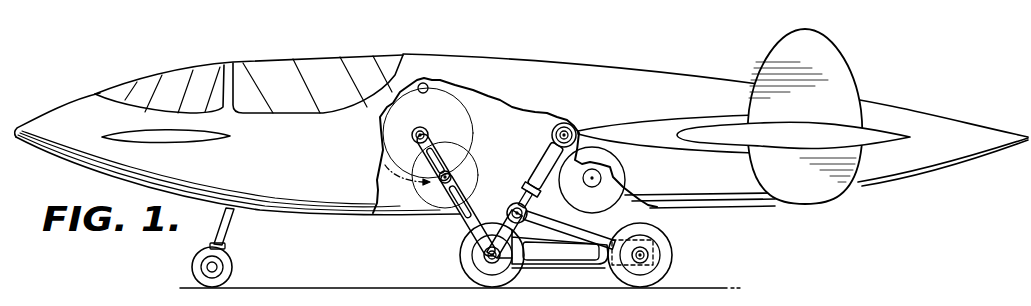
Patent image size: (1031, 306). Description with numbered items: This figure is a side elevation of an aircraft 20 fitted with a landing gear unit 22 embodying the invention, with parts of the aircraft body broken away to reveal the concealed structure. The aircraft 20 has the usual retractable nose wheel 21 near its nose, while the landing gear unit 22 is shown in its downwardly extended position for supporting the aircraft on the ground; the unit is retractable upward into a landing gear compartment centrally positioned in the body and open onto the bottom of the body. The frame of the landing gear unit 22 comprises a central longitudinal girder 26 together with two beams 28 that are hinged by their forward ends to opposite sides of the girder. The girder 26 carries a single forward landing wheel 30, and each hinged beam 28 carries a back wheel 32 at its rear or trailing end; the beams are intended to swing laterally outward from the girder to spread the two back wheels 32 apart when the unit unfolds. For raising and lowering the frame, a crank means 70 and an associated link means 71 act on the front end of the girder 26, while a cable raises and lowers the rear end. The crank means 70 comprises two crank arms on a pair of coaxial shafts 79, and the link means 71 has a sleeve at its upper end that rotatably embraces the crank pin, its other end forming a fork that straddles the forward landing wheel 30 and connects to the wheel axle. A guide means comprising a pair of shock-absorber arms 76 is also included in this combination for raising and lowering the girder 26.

The aircraft 20 is at (664, 69).
The retractable nose wheel 21 is at (232, 267).
The landing gear unit 22 is at (570, 274).
The central longitudinal girder 26 is at (506, 191).
The beams 28 is at (588, 272).
The forward landing wheel 30 is at (458, 258).
The back wheel 32 is at (668, 243).
The crank means 70 is at (422, 161).
The link means 71 is at (444, 202).
The shock-absorber arms 76 is at (540, 162).
The coaxial shafts 79 is at (428, 133).